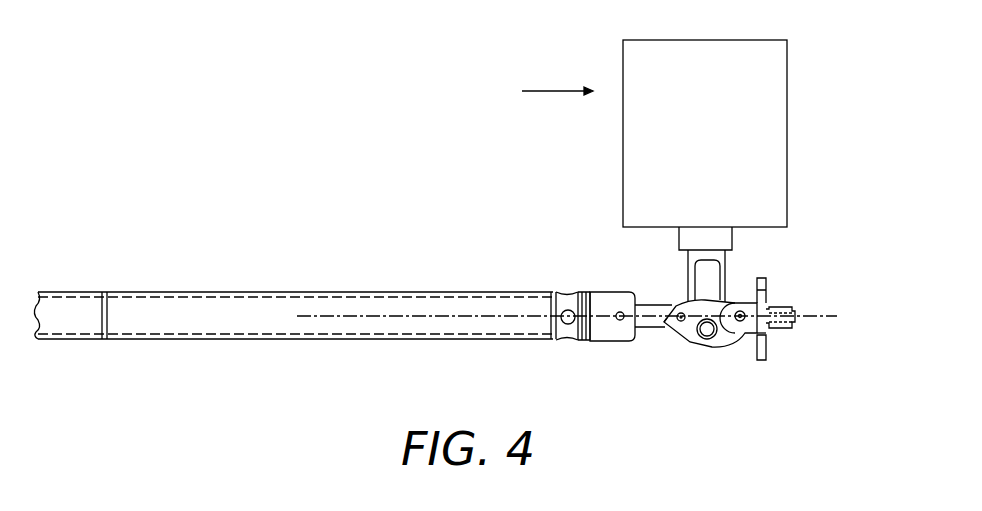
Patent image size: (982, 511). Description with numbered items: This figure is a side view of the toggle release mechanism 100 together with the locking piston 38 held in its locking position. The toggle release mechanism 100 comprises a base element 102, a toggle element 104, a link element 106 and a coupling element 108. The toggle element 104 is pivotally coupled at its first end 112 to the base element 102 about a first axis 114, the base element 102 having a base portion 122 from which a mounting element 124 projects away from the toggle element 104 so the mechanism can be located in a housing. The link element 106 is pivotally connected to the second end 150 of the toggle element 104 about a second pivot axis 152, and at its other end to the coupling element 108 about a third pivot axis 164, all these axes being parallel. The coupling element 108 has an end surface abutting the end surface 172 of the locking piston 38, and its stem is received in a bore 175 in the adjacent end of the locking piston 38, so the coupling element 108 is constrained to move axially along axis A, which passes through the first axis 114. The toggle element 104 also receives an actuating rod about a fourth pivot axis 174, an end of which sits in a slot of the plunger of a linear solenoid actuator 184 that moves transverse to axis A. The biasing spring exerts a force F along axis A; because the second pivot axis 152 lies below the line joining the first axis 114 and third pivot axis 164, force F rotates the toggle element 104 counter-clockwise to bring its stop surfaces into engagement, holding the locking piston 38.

The locking piston 38 is at (472, 329).
The bore 175 is at (359, 339).
The axis A is at (415, 314).
The force F is at (557, 79).
The toggle release mechanism 100 is at (818, 228).
The base element 102 is at (766, 283).
The toggle element 104 is at (688, 346).
The link element 106 is at (655, 306).
The coupling element 108 is at (602, 341).
The first end 112 is at (766, 334).
The first axis 114 is at (741, 311).
The base portion 122 is at (766, 352).
The mounting element 124 is at (793, 313).
The second end 150 is at (666, 324).
The second pivot axis 152 is at (680, 321).
The third pivot axis 164 is at (619, 311).
The end surface 172 is at (589, 291).
The fourth pivot axis 174 is at (713, 337).
The linear solenoid actuator 184 is at (781, 102).